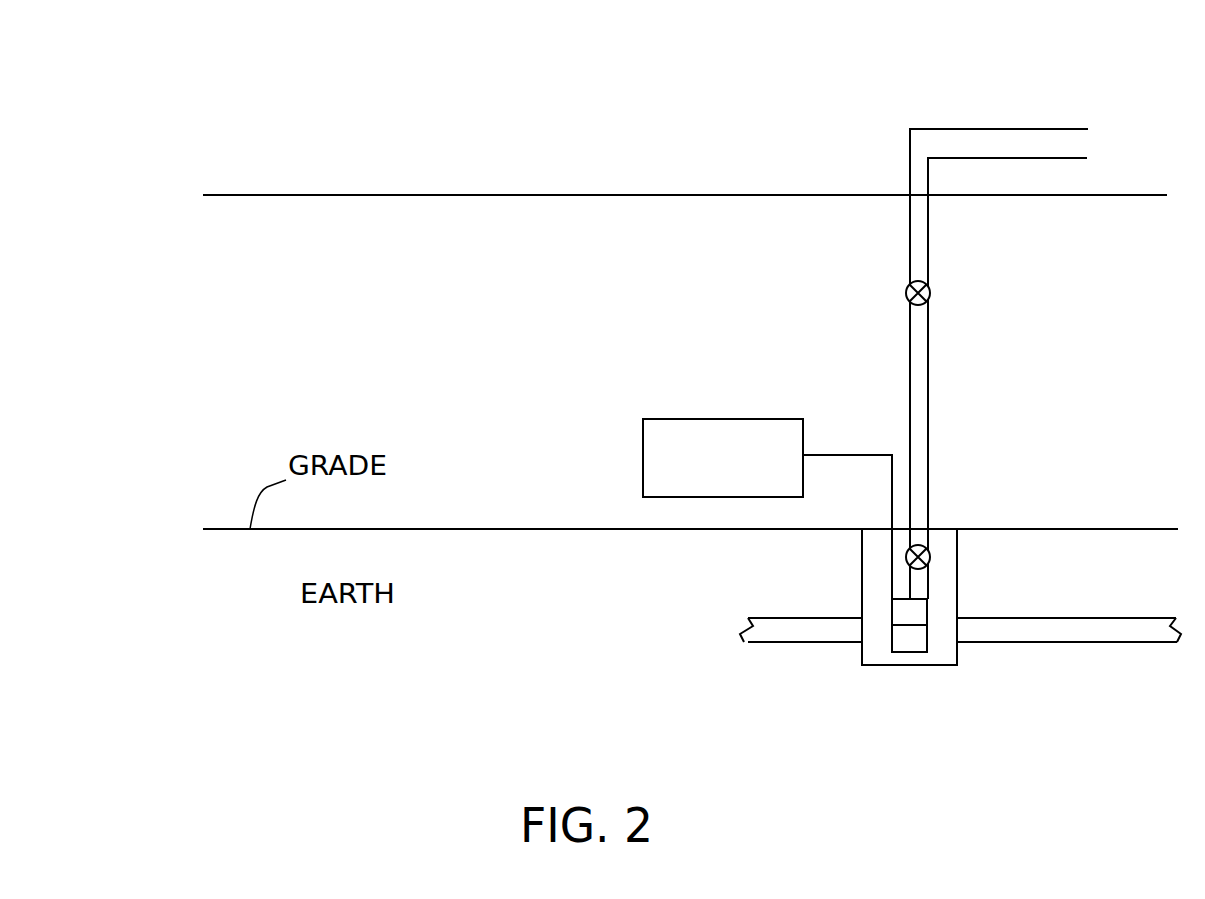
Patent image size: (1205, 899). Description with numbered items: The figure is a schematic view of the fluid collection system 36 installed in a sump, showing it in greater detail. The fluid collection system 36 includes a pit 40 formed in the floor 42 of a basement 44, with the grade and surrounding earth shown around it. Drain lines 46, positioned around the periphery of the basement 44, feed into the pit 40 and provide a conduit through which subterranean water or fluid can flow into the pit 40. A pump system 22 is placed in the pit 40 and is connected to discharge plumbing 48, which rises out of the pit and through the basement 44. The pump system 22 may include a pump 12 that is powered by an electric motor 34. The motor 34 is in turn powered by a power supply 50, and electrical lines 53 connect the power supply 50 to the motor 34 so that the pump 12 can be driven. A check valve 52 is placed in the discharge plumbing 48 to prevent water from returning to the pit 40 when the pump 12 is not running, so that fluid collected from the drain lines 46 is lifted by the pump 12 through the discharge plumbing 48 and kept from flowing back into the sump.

The pump 12 is at (828, 698).
The pump system 22 is at (930, 553).
The electric motor 34 is at (892, 608).
The fluid collection system 36 is at (503, 118).
The pit 40 is at (862, 550).
The floor 42 is at (486, 529).
The basement 44 is at (527, 307).
The drain lines 46 is at (1098, 642).
The discharge plumbing 48 is at (1053, 129).
The power supply 50 is at (747, 419).
The check valve 52 is at (930, 293).
The electrical lines 53 is at (848, 453).